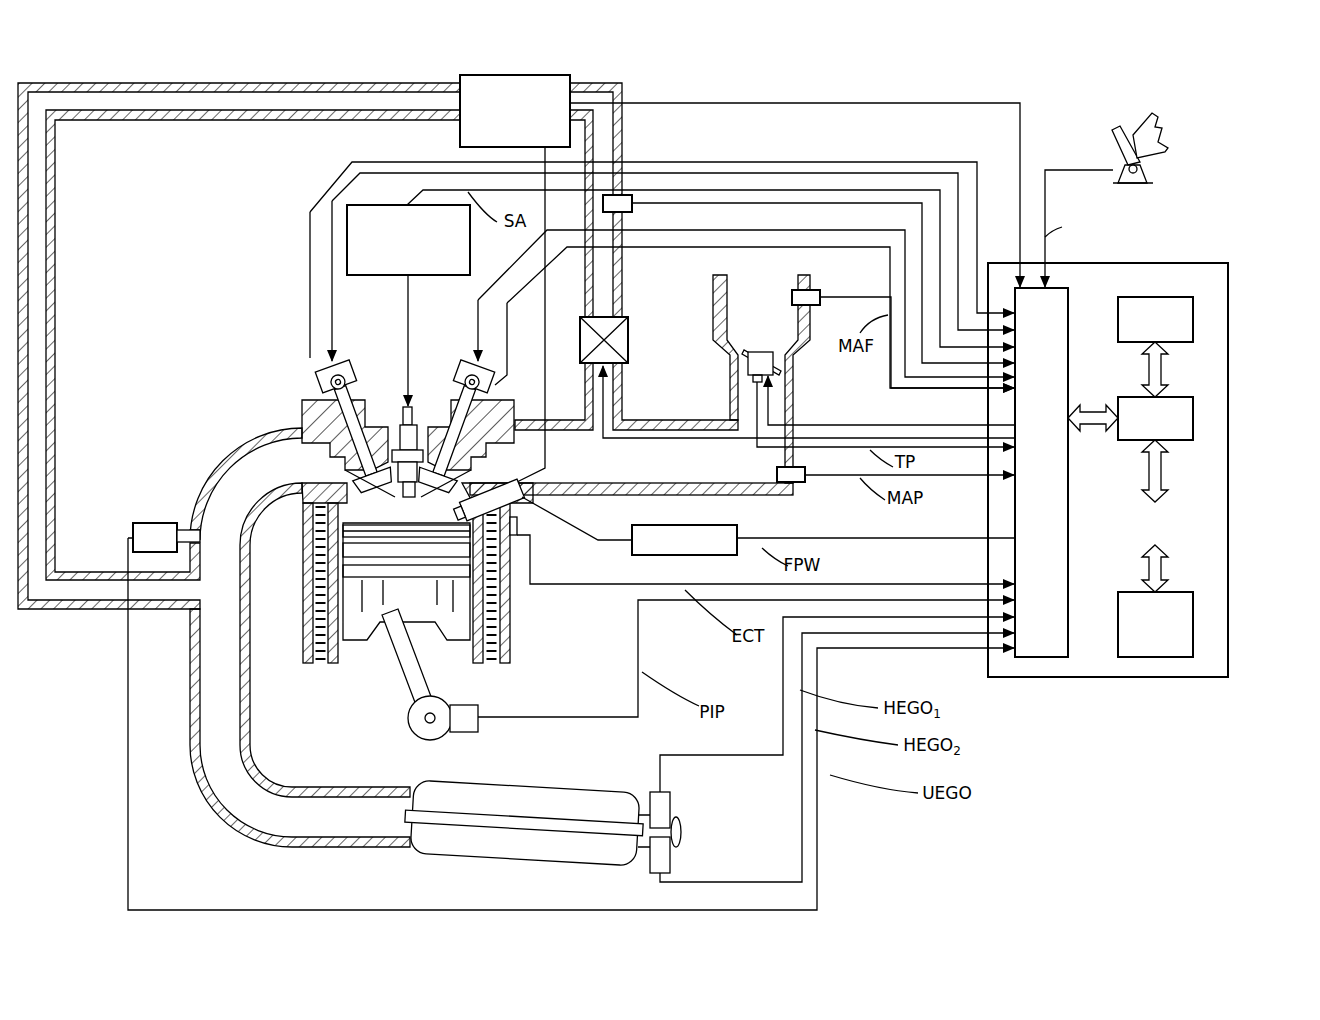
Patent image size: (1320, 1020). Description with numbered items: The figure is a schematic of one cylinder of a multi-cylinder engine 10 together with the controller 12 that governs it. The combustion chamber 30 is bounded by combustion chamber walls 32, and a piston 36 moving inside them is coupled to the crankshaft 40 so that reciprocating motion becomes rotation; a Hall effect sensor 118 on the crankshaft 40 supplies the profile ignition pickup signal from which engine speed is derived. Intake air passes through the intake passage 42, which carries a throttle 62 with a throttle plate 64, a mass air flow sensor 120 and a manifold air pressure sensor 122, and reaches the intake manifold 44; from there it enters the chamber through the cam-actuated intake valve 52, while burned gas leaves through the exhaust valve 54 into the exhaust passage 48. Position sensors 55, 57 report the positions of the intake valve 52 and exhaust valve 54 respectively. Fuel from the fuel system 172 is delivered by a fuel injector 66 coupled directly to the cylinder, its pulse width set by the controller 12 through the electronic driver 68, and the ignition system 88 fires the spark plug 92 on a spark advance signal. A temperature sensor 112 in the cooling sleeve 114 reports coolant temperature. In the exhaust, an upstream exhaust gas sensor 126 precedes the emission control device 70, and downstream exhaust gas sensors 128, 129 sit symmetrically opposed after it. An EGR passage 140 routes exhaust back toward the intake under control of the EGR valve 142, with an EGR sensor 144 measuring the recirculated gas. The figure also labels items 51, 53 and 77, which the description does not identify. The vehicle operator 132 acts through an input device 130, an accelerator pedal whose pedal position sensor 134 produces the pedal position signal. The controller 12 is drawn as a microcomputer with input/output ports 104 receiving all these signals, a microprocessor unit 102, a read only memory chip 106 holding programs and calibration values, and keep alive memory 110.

The engine 10 is at (232, 347).
The controller 12 is at (1217, 263).
The combustion chamber 30 is at (407, 503).
The combustion chamber walls 32 is at (345, 650).
The piston 36 is at (388, 612).
The crankshaft 40 is at (420, 733).
The intake passage 42 is at (761, 379).
The intake manifold 44 is at (631, 473).
The exhaust passage 48 is at (300, 650).
The intake valve actuator signal 51 is at (468, 362).
The intake valve 52 is at (458, 468).
The exhaust valve actuator signal 53 is at (352, 362).
The exhaust valve 54 is at (352, 465).
The position sensor 55 is at (488, 390).
The position sensor 57 is at (322, 372).
The throttle 62 is at (776, 362).
The throttle plate 64 is at (740, 358).
The fuel injector 66 is at (530, 510).
The electronic driver 68 is at (650, 556).
The emission control device 70 is at (600, 787).
The exhaust gas sensor 77 is at (683, 828).
The ignition system 88 is at (357, 205).
The spark plug 92 is at (413, 423).
The microprocessor unit 102 is at (737, 487).
The input/output ports 104 is at (1070, 297).
The read only memory chip 106 is at (1195, 317).
The keep alive memory 110 is at (1195, 630).
The temperature sensor 112 is at (528, 535).
The cooling sleeve 114 is at (520, 620).
The Hall effect sensor 118 is at (470, 733).
The mass air flow sensor 120 is at (815, 290).
The manifold air pressure sensor 122 is at (795, 485).
The upstream exhaust gas sensor 126 is at (133, 530).
The downstream exhaust gas sensor 128 is at (672, 797).
The downstream exhaust gas sensor 129 is at (672, 868).
The input device 130 is at (1115, 135).
The vehicle operator 132 is at (1168, 128).
The pedal position sensor 134 is at (1147, 170).
The EGR passage 140 is at (320, 83).
The EGR valve 142 is at (630, 340).
The EGR sensor 144 is at (630, 212).
The fuel system 172 is at (533, 75).